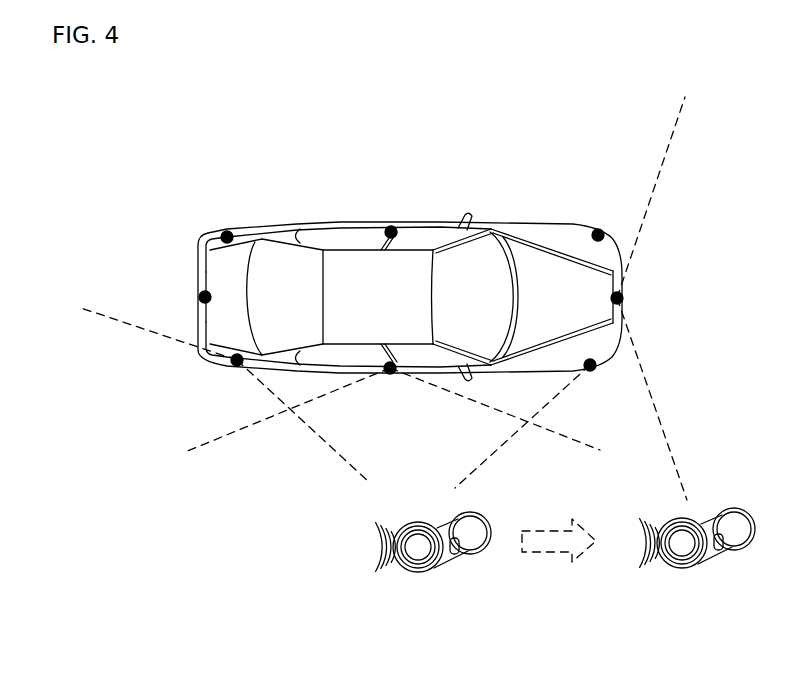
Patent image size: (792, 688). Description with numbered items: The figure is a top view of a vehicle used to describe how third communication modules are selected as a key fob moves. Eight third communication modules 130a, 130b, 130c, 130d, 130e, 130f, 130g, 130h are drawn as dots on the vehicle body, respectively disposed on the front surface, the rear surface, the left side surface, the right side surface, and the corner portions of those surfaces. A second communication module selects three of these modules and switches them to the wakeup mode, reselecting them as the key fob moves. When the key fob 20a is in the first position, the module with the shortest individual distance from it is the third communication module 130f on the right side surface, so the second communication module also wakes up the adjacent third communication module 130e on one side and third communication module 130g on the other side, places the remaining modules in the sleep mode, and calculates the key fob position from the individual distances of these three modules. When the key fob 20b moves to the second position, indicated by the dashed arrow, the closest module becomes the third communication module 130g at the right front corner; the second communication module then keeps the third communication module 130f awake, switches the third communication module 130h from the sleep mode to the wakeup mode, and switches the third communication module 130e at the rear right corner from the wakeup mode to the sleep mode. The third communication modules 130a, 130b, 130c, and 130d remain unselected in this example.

The third communication module 130a is at (597, 229).
The third communication module 130b is at (392, 226).
The third communication module 130c is at (227, 231).
The third communication module 130d is at (200, 297).
The third communication module 130e is at (232, 360).
The third communication module 130f is at (389, 375).
The third communication module 130g is at (596, 365).
The third communication module 130h is at (623, 298).
The key fob 20a is at (413, 575).
The key fob 20b is at (680, 568).